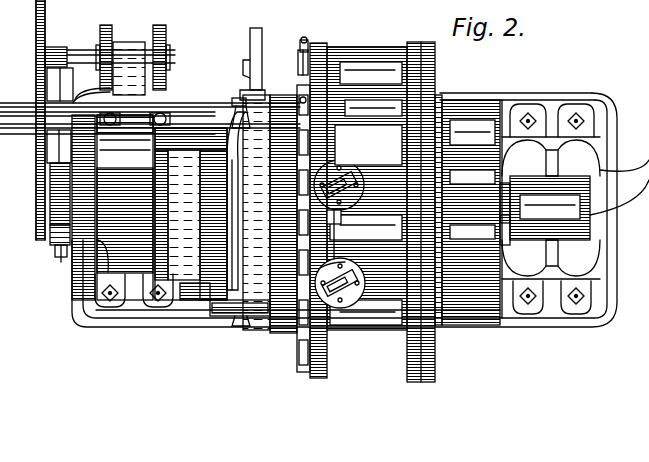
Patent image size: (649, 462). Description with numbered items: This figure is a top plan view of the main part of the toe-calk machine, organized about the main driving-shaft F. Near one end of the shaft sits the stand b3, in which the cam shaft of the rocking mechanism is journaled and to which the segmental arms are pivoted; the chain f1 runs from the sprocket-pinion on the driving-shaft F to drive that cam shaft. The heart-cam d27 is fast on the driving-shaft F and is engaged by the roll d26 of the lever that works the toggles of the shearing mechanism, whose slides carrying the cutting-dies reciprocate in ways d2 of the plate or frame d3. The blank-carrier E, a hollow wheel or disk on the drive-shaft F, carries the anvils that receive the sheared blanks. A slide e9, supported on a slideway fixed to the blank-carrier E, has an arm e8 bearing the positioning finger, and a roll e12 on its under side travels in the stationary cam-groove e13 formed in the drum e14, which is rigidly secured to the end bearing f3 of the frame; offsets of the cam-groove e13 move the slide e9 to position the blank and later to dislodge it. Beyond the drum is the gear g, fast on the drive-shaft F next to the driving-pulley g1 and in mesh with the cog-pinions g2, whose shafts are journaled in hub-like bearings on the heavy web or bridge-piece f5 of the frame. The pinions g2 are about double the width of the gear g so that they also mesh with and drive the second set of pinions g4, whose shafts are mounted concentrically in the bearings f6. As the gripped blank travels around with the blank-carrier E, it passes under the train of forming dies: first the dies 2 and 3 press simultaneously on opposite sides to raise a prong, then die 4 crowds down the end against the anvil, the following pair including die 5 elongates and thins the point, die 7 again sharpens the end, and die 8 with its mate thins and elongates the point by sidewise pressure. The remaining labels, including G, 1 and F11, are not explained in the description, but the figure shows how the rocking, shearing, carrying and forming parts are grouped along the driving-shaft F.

The stand b3 is at (129, 62).
The die 4 is at (226, 0).
The plate or frame d3 is at (254, 36).
The die 3 is at (312, 0).
The bearings f6 is at (367, 23).
The large gear wheel G is at (405, 201).
The cog-pinions g2 is at (440, 64).
The driving-pulley g1 is at (488, 94).
The main driving-shaft F is at (505, 208).
The chain f1 is at (40, 80).
The end bearing f3 is at (116, 148).
The drum e14 is at (178, 150).
The arm e8 is at (240, 102).
The shaft stud 1 is at (298, 58).
The die 2 is at (298, 95).
The roll e12 is at (222, 174).
The cam-groove e13 is at (216, 196).
The blank-carrier E is at (278, 166).
The web or bridge-piece f5 is at (396, 118).
The die 5 is at (336, 222).
The die 7 is at (366, 270).
The second set of pinions g4 is at (433, 152).
The gear g is at (433, 176).
The heart-cam d27 is at (84, 238).
The roll d26 is at (74, 266).
The ways d2 is at (200, 300).
The frame bar F11 is at (214, 308).
The slide e9 is at (243, 326).
The die 8 is at (311, 356).